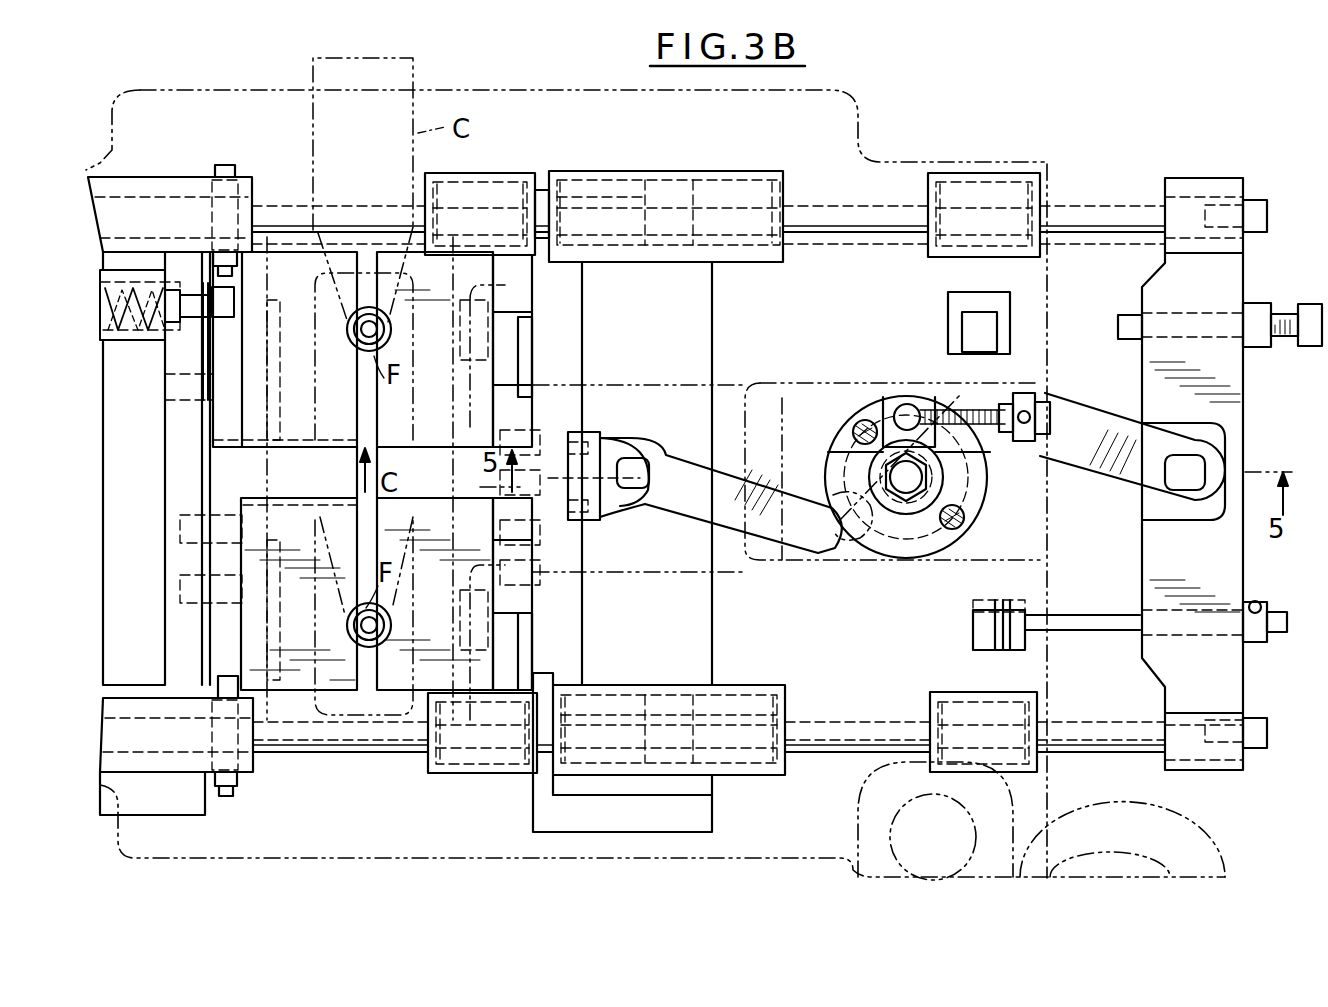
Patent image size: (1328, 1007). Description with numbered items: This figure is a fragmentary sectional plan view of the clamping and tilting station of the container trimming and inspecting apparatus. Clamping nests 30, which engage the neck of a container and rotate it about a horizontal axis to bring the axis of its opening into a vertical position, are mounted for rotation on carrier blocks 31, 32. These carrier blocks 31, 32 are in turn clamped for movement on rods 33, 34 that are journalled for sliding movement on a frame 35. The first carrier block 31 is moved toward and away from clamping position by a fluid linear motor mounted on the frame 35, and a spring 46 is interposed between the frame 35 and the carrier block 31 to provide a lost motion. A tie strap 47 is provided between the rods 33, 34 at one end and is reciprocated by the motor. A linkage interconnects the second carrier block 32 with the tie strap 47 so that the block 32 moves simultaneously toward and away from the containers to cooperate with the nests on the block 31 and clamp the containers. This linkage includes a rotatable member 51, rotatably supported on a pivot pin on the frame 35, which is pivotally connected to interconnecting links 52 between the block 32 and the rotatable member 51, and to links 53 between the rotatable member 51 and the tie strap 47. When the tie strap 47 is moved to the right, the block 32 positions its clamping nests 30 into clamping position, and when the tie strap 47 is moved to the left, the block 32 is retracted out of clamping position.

The clamping nests 30 is at (298, 432).
The carrier block 31 is at (180, 632).
The carrier block 32 is at (697, 645).
The rod 33 is at (1105, 724).
The rod 34 is at (1120, 224).
The frame 35 is at (862, 128).
The spring 46 is at (152, 340).
The tie strap 47 is at (1236, 418).
The rotatable member 51 is at (974, 503).
The interconnecting links 52 is at (728, 487).
The links 53 is at (1118, 468).